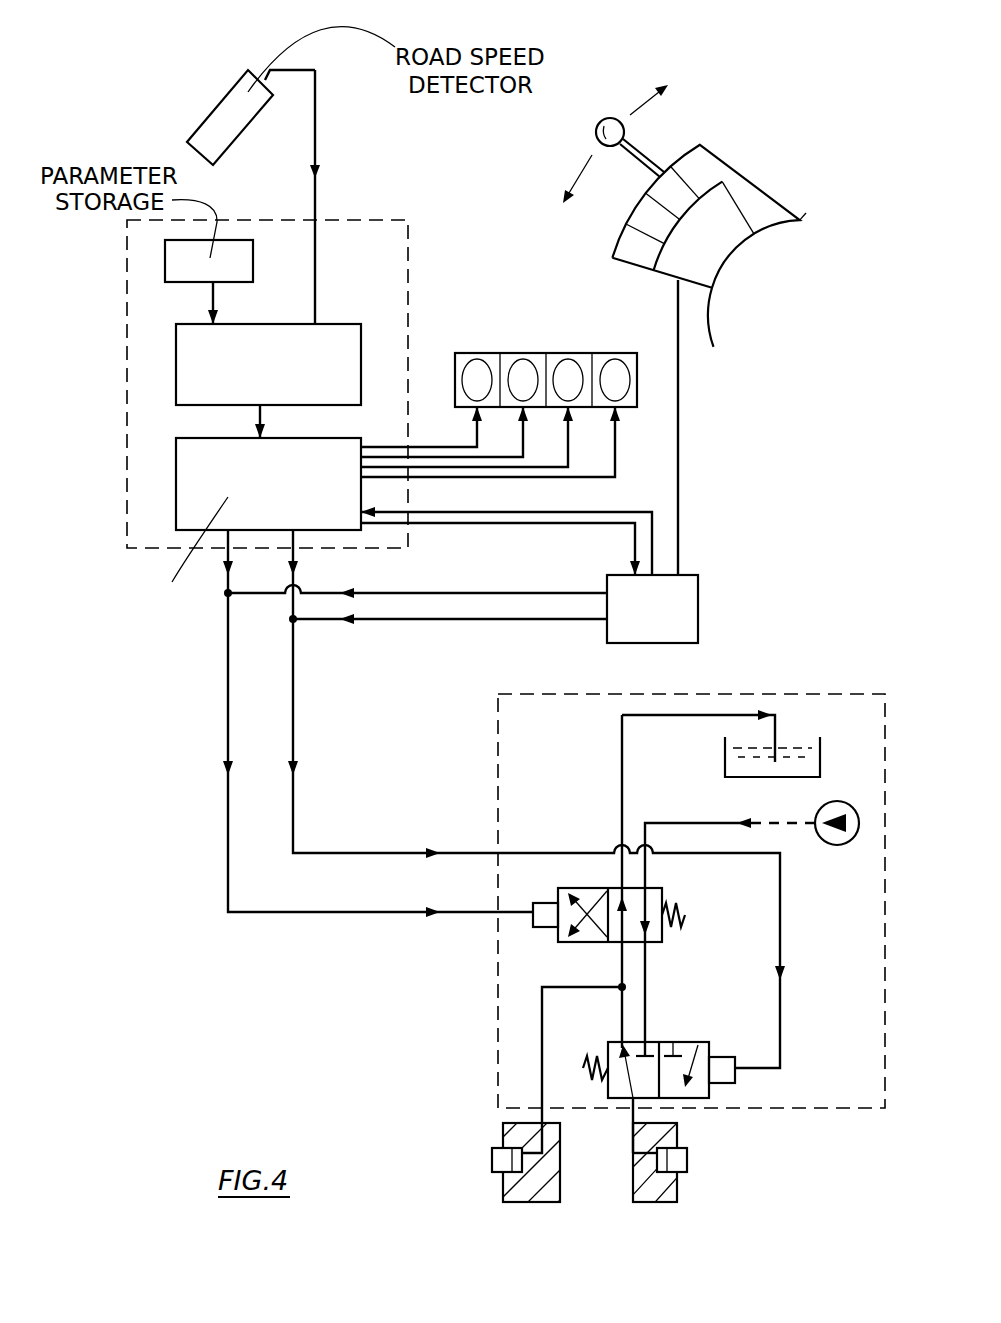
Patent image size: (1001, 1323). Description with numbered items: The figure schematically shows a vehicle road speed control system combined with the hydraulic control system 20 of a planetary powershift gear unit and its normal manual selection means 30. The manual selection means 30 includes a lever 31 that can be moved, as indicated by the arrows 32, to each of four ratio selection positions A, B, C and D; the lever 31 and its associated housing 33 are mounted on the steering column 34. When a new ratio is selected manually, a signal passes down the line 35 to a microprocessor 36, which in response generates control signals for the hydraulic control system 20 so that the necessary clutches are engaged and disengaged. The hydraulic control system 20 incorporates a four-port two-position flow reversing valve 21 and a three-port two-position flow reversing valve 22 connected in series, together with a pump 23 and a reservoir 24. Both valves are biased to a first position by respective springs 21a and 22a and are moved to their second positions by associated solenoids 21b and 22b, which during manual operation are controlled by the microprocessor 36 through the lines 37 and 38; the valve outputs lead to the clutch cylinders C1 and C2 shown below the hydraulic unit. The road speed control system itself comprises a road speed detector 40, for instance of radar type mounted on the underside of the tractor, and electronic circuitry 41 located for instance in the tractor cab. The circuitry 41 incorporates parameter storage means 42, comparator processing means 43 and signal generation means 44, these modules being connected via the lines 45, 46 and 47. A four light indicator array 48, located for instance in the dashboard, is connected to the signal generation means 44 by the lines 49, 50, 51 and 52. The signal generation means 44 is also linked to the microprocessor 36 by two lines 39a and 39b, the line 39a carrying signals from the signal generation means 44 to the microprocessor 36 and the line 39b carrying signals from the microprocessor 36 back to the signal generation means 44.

The hydraulic control system 20 is at (498, 758).
The four-port two-position flow reversing valve 21 is at (583, 943).
The spring 21a is at (676, 910).
The solenoid 21b is at (533, 905).
The three-port two-position flow reversing valve 22 is at (688, 1042).
The spring 22a is at (590, 1057).
The solenoid 22b is at (733, 1055).
The pump 23 is at (838, 846).
The reservoir 24 is at (820, 755).
The manual selection means 30 is at (722, 132).
The lever 31 is at (638, 143).
The arrows 32 is at (642, 103).
The housing 33 is at (733, 190).
The steering column 34 is at (810, 228).
The line 35 is at (680, 438).
The microprocessor 36 is at (698, 588).
The line 37 is at (415, 619).
The line 38 is at (452, 593).
The line 39a is at (530, 525).
The line 39b is at (593, 508).
The road speed detector 40 is at (220, 104).
The electronic circuitry 41 is at (377, 220).
The parameter storage means 42 is at (253, 243).
The comparator processing means 43 is at (176, 392).
The signal generation means 44 is at (176, 490).
The line 45 is at (317, 110).
The line 46 is at (215, 320).
The line 47 is at (262, 420).
The four light indicator array 48 is at (566, 350).
The line 49 is at (476, 440).
The line 50 is at (523, 432).
The line 51 is at (570, 432).
The line 52 is at (617, 445).
The first clutch cylinder C1 is at (490, 1181).
The second clutch cylinder C2 is at (693, 1181).